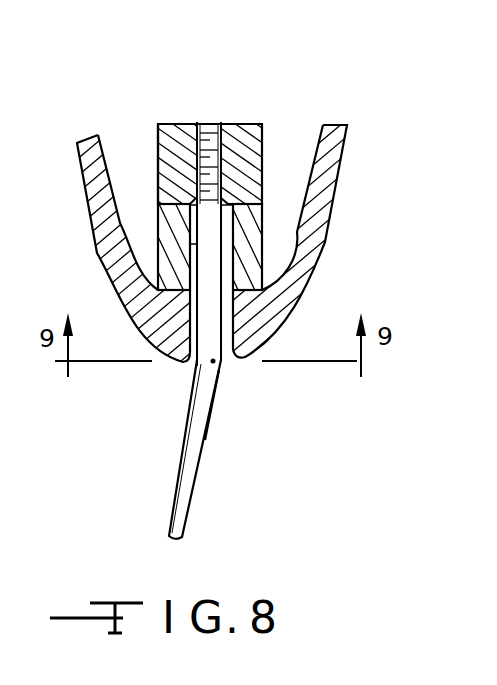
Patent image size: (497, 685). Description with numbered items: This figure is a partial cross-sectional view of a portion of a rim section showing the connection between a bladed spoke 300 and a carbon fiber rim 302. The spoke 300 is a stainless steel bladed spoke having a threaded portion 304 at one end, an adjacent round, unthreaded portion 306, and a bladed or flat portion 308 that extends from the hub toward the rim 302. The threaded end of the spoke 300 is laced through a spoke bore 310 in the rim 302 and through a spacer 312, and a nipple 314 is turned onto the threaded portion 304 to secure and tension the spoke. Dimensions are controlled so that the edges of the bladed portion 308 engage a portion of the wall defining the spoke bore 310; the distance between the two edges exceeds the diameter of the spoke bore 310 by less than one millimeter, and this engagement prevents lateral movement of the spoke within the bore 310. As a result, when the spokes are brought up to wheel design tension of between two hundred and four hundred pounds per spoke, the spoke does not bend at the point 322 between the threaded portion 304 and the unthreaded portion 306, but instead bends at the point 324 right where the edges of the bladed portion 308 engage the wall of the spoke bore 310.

The bladed spoke 300 is at (212, 452).
The carbon fiber rim 302 is at (332, 211).
The threaded portion 304 is at (209, 119).
The unthreaded portion 306 is at (190, 244).
The bladed portion 308 is at (207, 417).
The spoke bore 310 is at (193, 326).
The spacer 312 is at (263, 253).
The nipple 314 is at (158, 140).
The point between threaded and unthreaded portions 322 is at (212, 205).
The bending point 324 is at (220, 365).